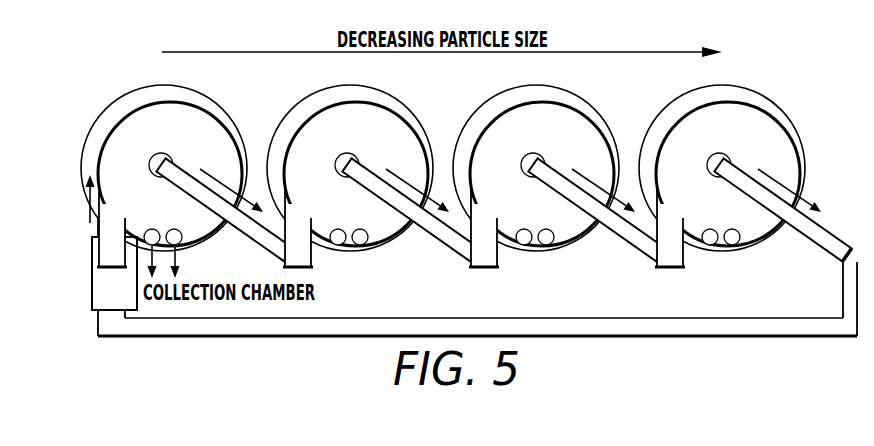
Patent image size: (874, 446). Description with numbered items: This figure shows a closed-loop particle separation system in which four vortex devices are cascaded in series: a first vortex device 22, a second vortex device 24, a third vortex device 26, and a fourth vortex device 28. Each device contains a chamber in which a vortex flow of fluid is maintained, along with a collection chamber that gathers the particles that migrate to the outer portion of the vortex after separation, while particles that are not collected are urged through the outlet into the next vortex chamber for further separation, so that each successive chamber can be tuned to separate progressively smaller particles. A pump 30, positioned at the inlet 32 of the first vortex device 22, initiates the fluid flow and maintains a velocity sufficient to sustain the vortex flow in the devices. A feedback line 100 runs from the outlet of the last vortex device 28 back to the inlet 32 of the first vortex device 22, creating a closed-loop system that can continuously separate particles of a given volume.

The first vortex device 22 is at (197, 91).
The second vortex device 24 is at (381, 91).
The third vortex device 26 is at (567, 91).
The fourth vortex device 28 is at (753, 91).
The pump 30 is at (92, 286).
The inlet 32 is at (99, 223).
The feedback line 100 is at (401, 318).